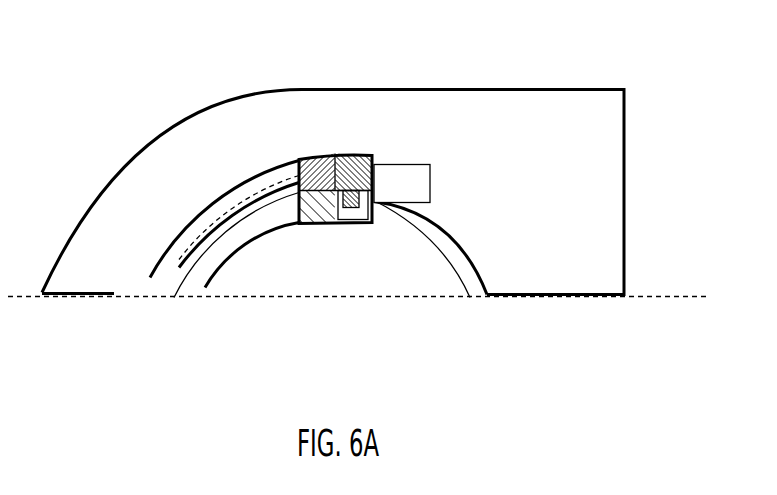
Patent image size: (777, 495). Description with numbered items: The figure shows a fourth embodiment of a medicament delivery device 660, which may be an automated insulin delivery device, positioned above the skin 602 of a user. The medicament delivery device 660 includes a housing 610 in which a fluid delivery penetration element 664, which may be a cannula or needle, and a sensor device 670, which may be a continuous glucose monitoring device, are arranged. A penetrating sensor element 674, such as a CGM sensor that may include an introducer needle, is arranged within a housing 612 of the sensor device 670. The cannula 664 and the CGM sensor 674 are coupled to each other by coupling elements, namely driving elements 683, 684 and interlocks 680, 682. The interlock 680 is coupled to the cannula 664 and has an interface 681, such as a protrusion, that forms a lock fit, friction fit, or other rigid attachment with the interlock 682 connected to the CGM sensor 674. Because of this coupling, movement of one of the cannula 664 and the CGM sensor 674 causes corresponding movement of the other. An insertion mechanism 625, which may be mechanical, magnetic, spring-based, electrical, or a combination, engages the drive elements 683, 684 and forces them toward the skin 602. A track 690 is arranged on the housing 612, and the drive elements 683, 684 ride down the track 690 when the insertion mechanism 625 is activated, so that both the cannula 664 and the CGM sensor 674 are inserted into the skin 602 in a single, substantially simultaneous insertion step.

The housing 610 is at (537, 87).
The skin 602 is at (693, 294).
The housing 612 is at (468, 285).
The insertion mechanism 625 is at (417, 193).
The medicament delivery device 660 is at (607, 275).
The fluid delivery penetration element 664 is at (178, 226).
The sensor device 670 is at (442, 287).
The penetrating sensor element 674 is at (243, 246).
The interlock 680 is at (362, 153).
The interface 681 is at (421, 207).
The interlock 682 is at (350, 223).
The driving element 683 is at (317, 155).
The driving element 684 is at (302, 223).
The track 690 is at (268, 183).